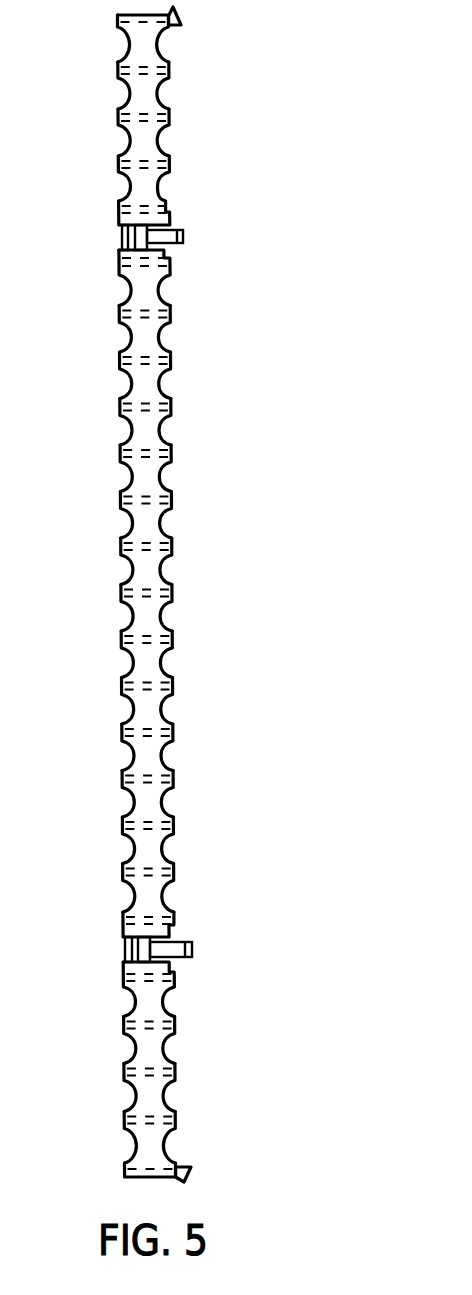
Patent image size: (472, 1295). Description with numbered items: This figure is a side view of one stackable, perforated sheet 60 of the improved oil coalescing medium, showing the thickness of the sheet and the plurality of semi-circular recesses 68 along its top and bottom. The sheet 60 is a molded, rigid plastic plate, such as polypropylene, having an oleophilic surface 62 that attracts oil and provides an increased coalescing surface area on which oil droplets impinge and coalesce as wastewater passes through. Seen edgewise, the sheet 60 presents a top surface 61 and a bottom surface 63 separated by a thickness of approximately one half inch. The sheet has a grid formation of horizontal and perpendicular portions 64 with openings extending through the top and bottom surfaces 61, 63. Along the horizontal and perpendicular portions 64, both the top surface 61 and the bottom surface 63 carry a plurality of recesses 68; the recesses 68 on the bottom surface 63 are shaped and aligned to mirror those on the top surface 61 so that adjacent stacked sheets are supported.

The stackable, perforated sheet 60 is at (205, 61).
The top surface 61 is at (175, 638).
The oleophilic surface 62 is at (142, 433).
The bottom surface 63 is at (122, 640).
The horizontal and perpendicular portions 64 is at (173, 1022).
The recesses 68 is at (128, 565).